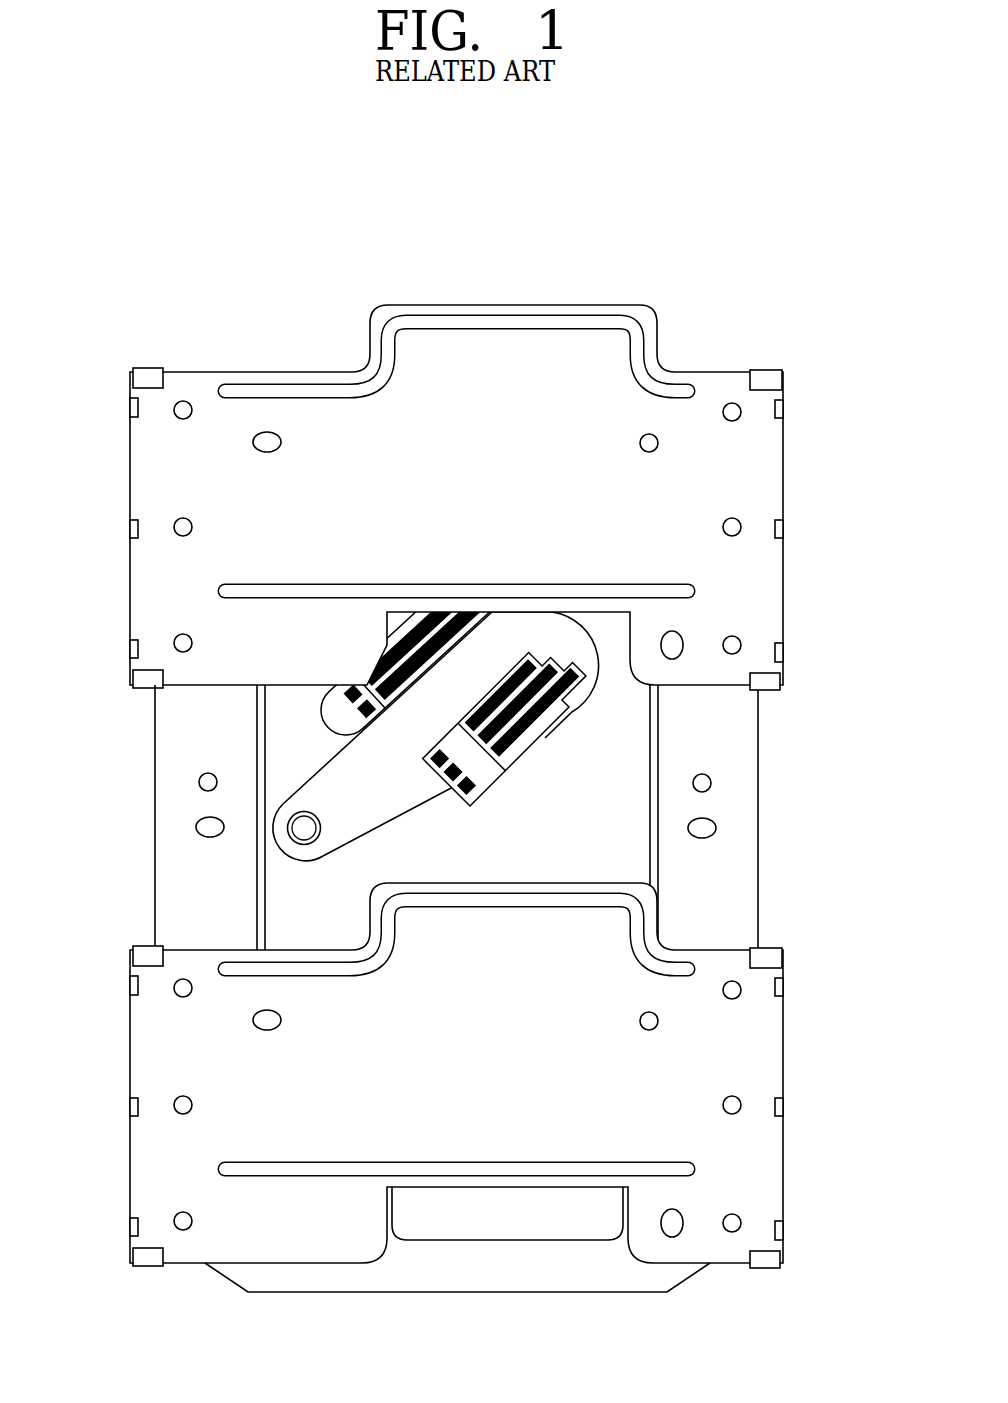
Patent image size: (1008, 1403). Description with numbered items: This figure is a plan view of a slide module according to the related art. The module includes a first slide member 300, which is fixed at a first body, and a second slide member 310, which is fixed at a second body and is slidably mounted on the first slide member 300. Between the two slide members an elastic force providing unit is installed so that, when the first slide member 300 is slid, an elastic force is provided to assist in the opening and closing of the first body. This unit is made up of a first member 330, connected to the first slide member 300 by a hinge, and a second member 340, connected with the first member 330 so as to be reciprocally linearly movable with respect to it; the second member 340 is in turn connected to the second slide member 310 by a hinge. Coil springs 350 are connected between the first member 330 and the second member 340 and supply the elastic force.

The first slide member 300 is at (748, 858).
The second slide member 310 is at (776, 459).
The first member 330 is at (342, 776).
The second member 340 is at (340, 712).
The coil springs 350 is at (646, 721).